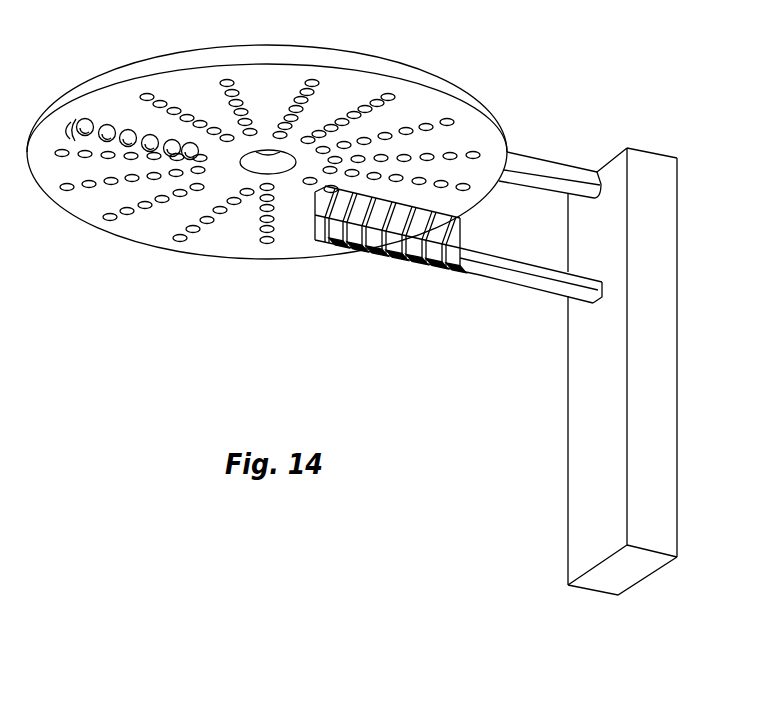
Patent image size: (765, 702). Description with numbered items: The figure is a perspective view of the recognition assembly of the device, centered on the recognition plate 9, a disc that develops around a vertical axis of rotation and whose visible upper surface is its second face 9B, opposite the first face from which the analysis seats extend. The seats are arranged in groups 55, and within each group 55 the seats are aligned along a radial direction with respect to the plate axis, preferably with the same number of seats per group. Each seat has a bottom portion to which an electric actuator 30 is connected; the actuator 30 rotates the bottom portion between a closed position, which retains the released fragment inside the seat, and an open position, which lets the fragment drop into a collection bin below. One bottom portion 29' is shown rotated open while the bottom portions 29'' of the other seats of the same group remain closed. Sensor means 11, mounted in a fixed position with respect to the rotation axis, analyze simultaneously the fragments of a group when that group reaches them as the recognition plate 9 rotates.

The recognition plate 9 is at (480, 88).
The second face 9B is at (230, 232).
The sensor means 11 is at (417, 272).
The bottom portion 29' is at (131, 216).
The bottom portions 29'' is at (138, 223).
The electric actuator 30 is at (133, 133).
The group 55 is at (87, 117).